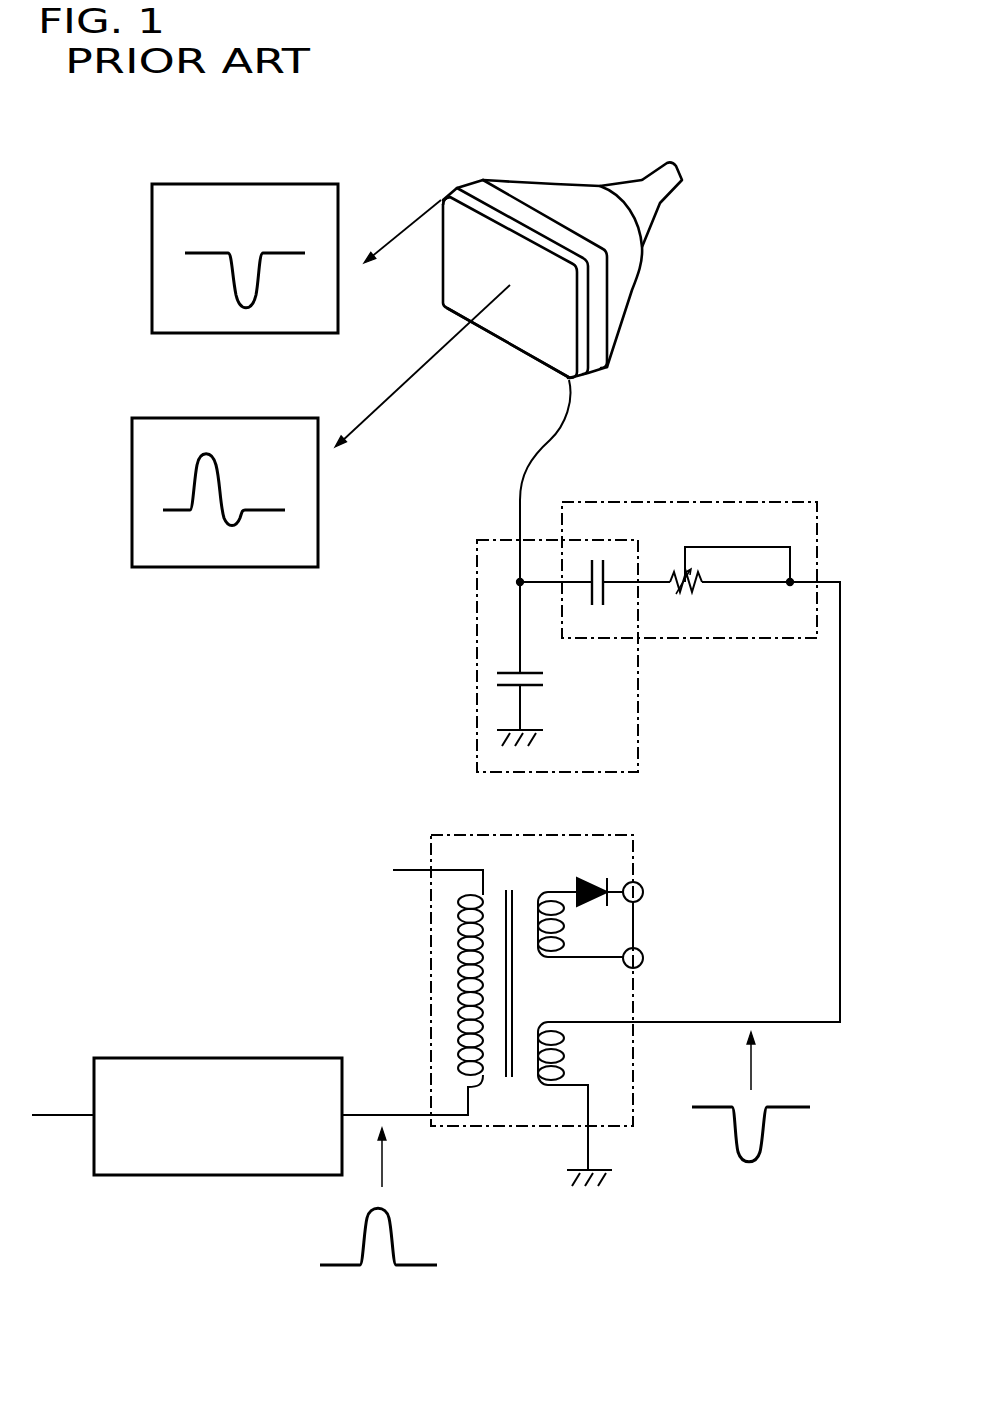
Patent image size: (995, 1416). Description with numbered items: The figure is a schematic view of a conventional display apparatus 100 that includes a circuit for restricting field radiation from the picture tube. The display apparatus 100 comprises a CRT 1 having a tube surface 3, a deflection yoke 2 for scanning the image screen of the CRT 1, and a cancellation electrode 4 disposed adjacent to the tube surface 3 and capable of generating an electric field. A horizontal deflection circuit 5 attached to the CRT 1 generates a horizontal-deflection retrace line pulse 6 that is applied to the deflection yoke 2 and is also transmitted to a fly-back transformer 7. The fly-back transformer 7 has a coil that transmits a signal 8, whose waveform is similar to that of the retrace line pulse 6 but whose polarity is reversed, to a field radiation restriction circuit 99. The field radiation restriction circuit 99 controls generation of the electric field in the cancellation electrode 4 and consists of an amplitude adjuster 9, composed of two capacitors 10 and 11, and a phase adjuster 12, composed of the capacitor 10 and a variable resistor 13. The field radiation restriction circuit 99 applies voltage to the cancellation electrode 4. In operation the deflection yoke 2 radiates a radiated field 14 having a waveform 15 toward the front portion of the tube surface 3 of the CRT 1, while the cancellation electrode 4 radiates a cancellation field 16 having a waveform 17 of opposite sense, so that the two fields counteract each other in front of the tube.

The CRT 1 is at (627, 332).
The deflection yoke 2 is at (655, 232).
The tube surface 3 is at (513, 313).
The cancellation electrode 4 is at (441, 200).
The horizontal deflection circuit 5 is at (217, 1058).
The retrace line pulse 6 is at (393, 1232).
The fly-back transformer 7 is at (431, 953).
The signal 8 is at (768, 1135).
The amplitude adjuster 9 is at (477, 617).
The capacitor 10 is at (598, 555).
The capacitor 11 is at (477, 675).
The phase adjuster 12 is at (688, 502).
The variable resistor 13 is at (693, 597).
The radiated field 14 is at (420, 367).
The waveform 15 is at (132, 488).
The cancellation field 16 is at (407, 235).
The waveform 17 is at (152, 256).
The field radiation restriction circuit 99 is at (668, 673).
The display apparatus 100 is at (766, 341).